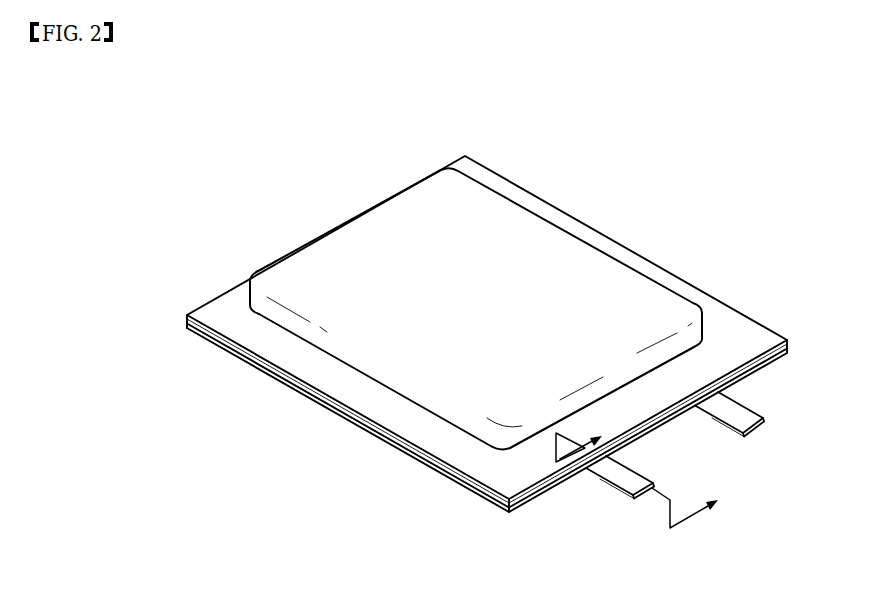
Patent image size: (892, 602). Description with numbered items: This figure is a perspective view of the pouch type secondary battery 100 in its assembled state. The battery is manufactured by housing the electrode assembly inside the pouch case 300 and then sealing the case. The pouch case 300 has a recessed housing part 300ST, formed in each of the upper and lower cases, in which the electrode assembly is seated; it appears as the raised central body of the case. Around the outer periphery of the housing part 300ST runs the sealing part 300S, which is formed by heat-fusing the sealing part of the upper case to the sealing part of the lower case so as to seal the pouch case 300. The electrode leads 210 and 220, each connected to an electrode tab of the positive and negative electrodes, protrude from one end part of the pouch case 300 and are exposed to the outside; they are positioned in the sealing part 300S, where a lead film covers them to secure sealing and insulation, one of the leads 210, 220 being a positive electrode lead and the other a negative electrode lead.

The pouch type secondary battery 100 is at (421, 90).
The pouch case 300 is at (476, 301).
The housing part 300ST is at (526, 243).
The sealing part 300S is at (302, 358).
The electrode lead 210 is at (610, 470).
The electrode lead 220 is at (743, 419).